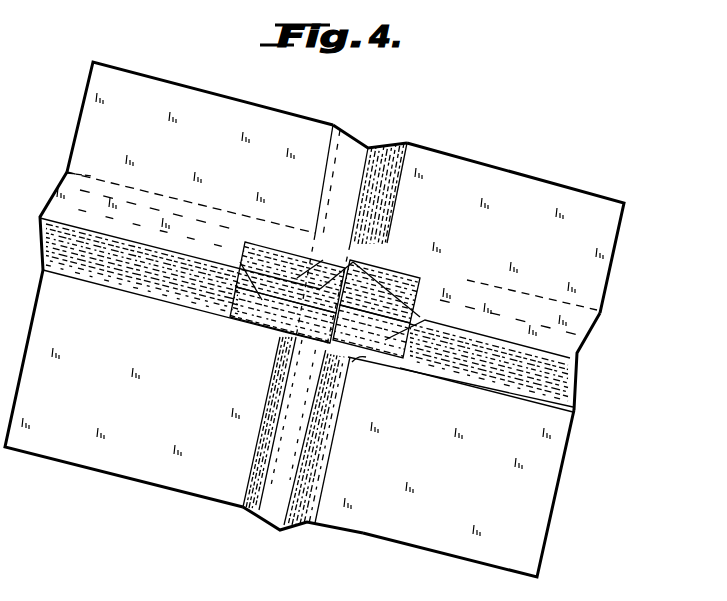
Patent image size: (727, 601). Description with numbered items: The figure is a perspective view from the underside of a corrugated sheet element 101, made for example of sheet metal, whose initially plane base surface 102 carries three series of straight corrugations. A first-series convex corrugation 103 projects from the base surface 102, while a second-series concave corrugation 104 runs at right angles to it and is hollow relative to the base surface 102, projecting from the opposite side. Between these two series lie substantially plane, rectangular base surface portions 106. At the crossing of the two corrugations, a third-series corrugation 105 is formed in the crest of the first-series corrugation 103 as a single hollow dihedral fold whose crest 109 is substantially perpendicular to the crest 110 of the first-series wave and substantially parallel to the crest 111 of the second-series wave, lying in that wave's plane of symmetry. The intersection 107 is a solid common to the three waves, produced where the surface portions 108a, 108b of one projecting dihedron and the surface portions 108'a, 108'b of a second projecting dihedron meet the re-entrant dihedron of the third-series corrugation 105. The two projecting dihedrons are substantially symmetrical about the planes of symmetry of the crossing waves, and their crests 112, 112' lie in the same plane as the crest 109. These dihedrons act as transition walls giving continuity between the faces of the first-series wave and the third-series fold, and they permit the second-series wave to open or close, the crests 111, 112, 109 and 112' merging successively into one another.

The sheet element 101 is at (528, 503).
The base surface 102 is at (63, 437).
The first-series convex rectilinear corrugation 103 is at (307, 488).
The second-series rectilinear concave corrugation 104 is at (112, 266).
The third-series rectilinear corrugation 105 is at (379, 250).
The base surface portion 106 is at (564, 210).
The intersection 107 is at (356, 370).
The surface portion of projecting dihedron 108a is at (384, 286).
The surface portion of projecting dihedron 108b is at (383, 328).
The surface portion of projecting dihedron 108'a is at (290, 245).
The surface portion of projecting dihedron 108'b is at (255, 324).
The crest of third-series wave 109 is at (322, 297).
The crest of first-series wave 110 is at (266, 446).
The crest of second-series wave 111 is at (543, 348).
The crest of projecting dihedron 112 is at (405, 277).
The crest of projecting dihedron 112' is at (229, 260).